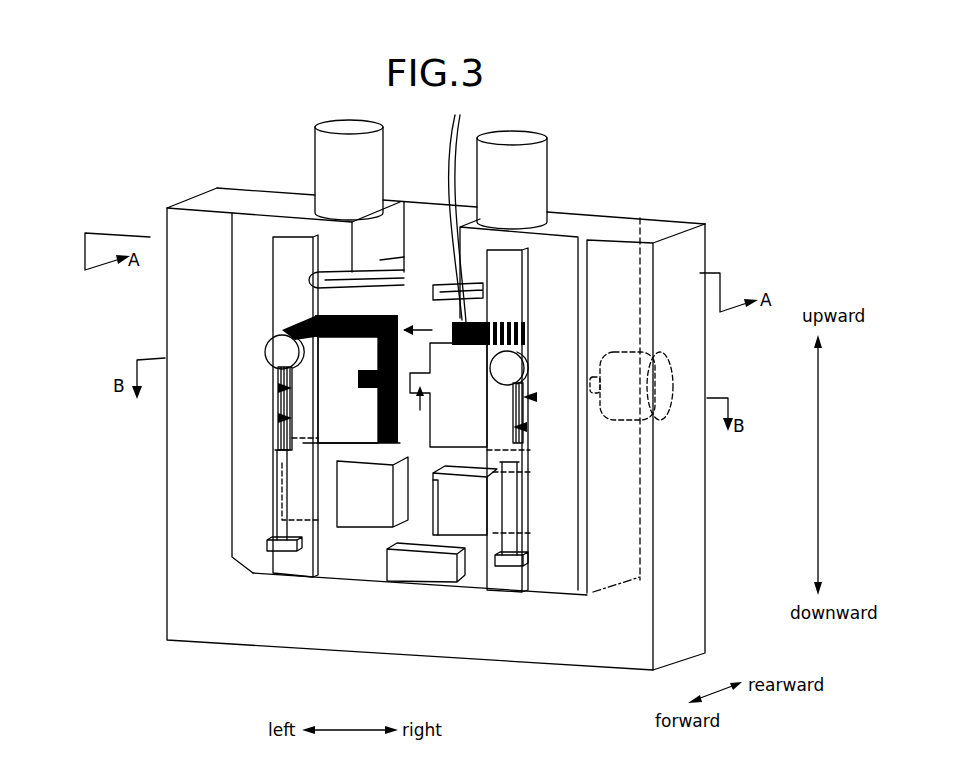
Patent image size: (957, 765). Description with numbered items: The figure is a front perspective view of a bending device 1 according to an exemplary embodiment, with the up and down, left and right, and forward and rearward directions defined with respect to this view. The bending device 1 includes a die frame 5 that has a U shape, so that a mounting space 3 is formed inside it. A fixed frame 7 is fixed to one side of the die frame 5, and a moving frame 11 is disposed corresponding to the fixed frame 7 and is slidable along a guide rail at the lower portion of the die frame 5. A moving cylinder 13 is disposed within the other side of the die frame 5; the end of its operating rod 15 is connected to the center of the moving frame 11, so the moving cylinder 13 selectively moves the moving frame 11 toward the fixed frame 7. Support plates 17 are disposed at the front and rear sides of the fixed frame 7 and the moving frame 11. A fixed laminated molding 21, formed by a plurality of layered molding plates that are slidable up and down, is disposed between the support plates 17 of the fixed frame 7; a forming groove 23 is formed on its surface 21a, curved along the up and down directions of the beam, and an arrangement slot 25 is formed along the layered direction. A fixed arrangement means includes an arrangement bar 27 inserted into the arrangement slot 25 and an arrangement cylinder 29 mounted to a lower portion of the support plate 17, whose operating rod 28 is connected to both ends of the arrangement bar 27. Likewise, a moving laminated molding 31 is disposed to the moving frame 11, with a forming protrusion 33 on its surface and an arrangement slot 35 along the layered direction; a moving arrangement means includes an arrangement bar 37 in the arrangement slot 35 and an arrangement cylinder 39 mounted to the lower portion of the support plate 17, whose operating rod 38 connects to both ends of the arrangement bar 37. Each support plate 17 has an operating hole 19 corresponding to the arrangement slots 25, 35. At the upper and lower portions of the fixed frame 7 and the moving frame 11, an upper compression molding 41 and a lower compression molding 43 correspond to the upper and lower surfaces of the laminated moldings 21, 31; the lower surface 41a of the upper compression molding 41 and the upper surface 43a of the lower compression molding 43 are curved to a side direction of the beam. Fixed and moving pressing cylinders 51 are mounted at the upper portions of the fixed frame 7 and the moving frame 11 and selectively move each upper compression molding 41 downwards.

The bending device 1 is at (722, 208).
The mounting space 3 is at (418, 216).
The die frame 5 is at (380, 627).
The fixed frame 7 is at (240, 290).
The moving frame 11 is at (590, 247).
The moving cylinder 13 is at (660, 405).
The operating rod 15 is at (537, 397).
The support plates 17 is at (300, 563).
The operating hole 19 is at (278, 388).
The fixed laminated molding 21 is at (388, 311).
The surface of the fixed laminated molding 21a is at (530, 330).
The forming groove 23 is at (366, 387).
The arrangement slot 25 is at (278, 418).
The arrangement bar 27 is at (280, 350).
The operating rod 28 is at (273, 432).
The arrangement cylinder 29 is at (262, 527).
The moving laminated molding 31 is at (462, 318).
The forming protrusion 33 is at (458, 520).
The arrangement slot 35 is at (615, 598).
The arrangement bar 37 is at (510, 368).
The operating rod 38 is at (583, 572).
The arrangement cylinder 39 is at (507, 563).
The upper compression molding 41 is at (380, 273).
The lower surface of the upper compression molding 41a is at (462, 205).
The lower compression molding 43 is at (338, 478).
The upper surface of the lower compression molding 43a is at (357, 470).
The fixed and moving pressing cylinders 51 is at (345, 130).